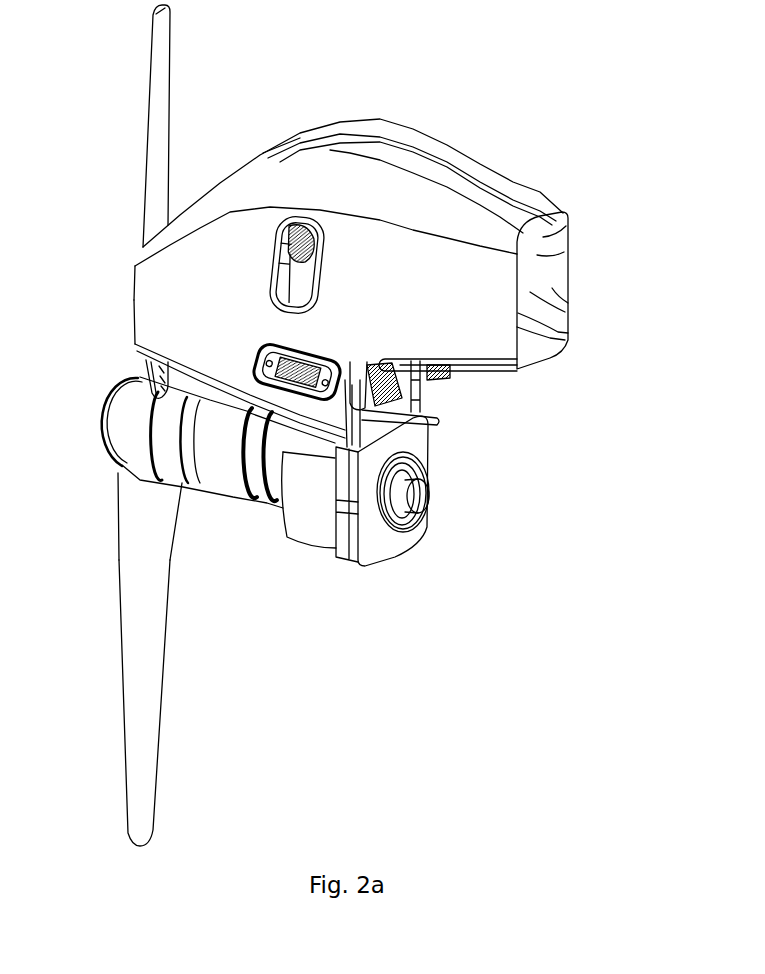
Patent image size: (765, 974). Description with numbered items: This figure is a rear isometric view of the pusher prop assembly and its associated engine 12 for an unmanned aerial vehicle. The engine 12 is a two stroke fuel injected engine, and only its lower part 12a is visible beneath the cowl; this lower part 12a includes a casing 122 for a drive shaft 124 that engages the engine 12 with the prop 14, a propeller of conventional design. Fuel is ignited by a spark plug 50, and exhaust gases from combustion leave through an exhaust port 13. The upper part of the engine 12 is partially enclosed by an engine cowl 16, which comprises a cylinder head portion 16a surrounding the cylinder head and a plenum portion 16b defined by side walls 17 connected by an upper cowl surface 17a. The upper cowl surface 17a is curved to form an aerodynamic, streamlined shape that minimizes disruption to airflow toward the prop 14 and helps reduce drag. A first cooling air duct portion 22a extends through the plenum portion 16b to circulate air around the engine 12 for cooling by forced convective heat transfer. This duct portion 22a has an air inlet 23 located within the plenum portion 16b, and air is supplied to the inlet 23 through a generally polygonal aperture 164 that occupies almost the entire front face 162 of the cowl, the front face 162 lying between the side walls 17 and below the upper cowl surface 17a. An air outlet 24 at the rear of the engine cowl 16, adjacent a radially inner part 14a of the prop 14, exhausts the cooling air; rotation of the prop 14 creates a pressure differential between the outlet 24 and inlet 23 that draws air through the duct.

The engine 12 is at (427, 413).
The lower part of engine 12a is at (307, 517).
The casing 122 is at (220, 455).
The drive shaft 124 is at (107, 417).
The exhaust port 13 is at (135, 270).
The prop 14 is at (147, 708).
The radially inner part of prop 14a is at (112, 488).
The engine cowl 16 is at (473, 327).
The cylinder head portion 16a is at (363, 260).
The plenum portion 16b is at (566, 218).
The side walls 17 is at (568, 263).
The upper cowl surface 17a is at (455, 152).
The first cooling air duct portion 22a is at (572, 243).
The air inlet 23 is at (570, 317).
The air outlet 24 is at (133, 299).
The spark plug 50 is at (285, 228).
The front face 162 is at (550, 357).
The aperture 164 is at (570, 302).